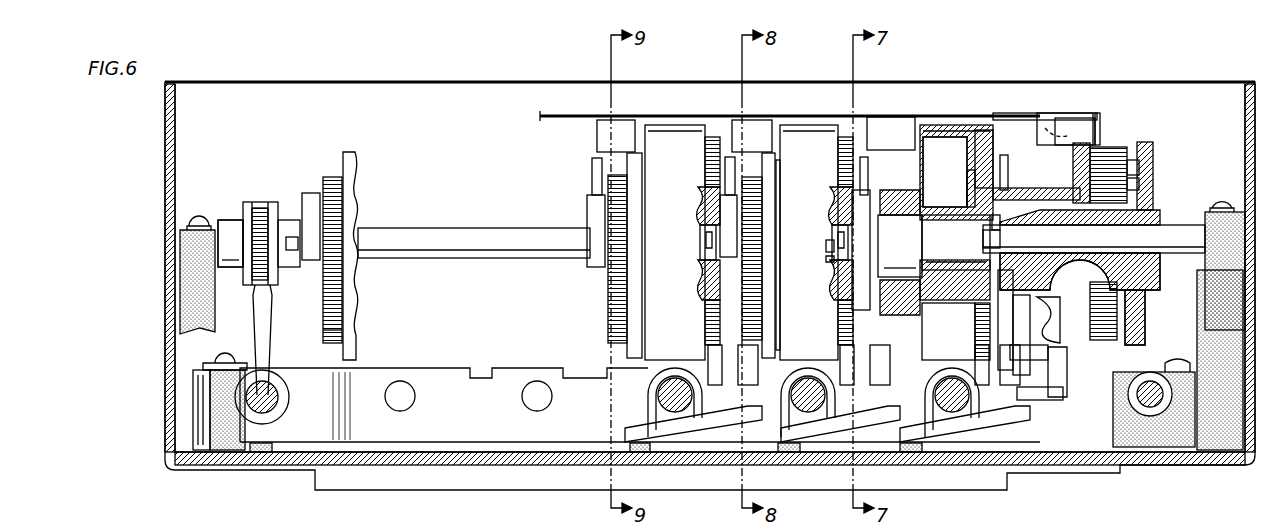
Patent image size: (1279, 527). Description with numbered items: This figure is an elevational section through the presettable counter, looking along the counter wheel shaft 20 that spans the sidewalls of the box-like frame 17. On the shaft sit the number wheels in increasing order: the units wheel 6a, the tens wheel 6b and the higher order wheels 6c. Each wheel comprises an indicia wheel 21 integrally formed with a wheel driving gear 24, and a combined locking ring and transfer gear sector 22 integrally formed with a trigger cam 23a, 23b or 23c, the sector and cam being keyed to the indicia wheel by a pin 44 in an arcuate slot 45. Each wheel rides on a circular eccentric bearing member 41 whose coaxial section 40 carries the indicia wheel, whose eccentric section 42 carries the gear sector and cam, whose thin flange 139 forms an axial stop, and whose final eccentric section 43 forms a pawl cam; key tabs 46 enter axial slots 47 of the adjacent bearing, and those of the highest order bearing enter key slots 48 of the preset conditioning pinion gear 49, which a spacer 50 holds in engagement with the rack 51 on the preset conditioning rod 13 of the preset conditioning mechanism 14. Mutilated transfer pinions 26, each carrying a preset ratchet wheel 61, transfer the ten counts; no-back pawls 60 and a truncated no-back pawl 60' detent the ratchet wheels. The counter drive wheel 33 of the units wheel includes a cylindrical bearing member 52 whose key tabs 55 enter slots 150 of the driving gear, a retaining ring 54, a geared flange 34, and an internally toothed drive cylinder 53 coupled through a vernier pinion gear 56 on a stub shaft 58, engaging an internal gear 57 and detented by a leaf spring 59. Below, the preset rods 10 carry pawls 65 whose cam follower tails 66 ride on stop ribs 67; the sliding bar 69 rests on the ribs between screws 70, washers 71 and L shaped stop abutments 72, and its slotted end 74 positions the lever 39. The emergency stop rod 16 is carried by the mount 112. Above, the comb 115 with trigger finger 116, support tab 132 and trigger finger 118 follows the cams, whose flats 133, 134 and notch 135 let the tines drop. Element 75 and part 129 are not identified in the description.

The lowest order number wheel 6a is at (953, 125).
The next-to-lowest order number wheel 6b is at (815, 124).
The higher order number wheels 6c is at (680, 124).
The preset rods 10 is at (658, 397).
The preset conditioning rod 13 is at (278, 408).
The preset conditioning mechanism 14 is at (230, 208).
The emergency stop rod 16 is at (1148, 412).
The housing or frame 17 is at (1255, 388).
The counter wheel shaft 20 is at (458, 228).
The indicia wheel 21 is at (697, 124).
The combined locking ring and transfer gear sector 22 is at (325, 340).
The trigger cam 23a is at (946, 172).
The trigger cam 23b is at (778, 182).
The trigger cam 23c is at (350, 152).
The wheel driving gear 24 is at (712, 137).
The mutilated transfer pinions 26 is at (840, 360).
The counter drive wheel 33 is at (1098, 136).
The counter drive gear 34 is at (1145, 140).
The lever 39 is at (1066, 382).
The axial section 40 is at (700, 228).
The circular eccentric bearing member 41 is at (1008, 219).
The axial section 42 is at (915, 242).
The axial section 43 is at (309, 193).
The pin 44 is at (940, 316).
The arcuate slot 45 is at (955, 331).
The key tabs 46 is at (292, 275).
The axial slots 47 is at (1010, 241).
The axial key slots 48 is at (289, 236).
The preset conditioning pinion gear 49 is at (258, 204).
The spacer 50 is at (230, 218).
The rack 51 is at (256, 300).
The cylindrical bearing member 52 is at (1210, 212).
The internally toothed drive cylinder 53 is at (1115, 148).
The retaining ring 54 is at (1220, 208).
The key tabs 55 is at (978, 292).
The adjustable vernier pinion gear 56 is at (1140, 166).
The internal gear 57 is at (1095, 335).
The stub shaft 58 is at (1143, 184).
The leaf spring 59 is at (1097, 265).
The no-back pawls 60 is at (716, 144).
The truncated no-back pawl 60' is at (1010, 140).
The preset ratchet wheels 61 is at (702, 290).
The pawls 65 is at (827, 424).
The cam follower tails 66 is at (650, 420).
The flat stop ribs 67 is at (640, 452).
The sliding bar 69 is at (470, 416).
The upright screws 70 is at (230, 358).
The washers 71 is at (208, 370).
The L shaped stop abutments 72 is at (537, 382).
The slotted end 74 is at (1040, 400).
The base 75 is at (257, 457).
The mount 112 is at (1172, 442).
The comb 115 is at (548, 114).
The trigger finger 116 is at (892, 130).
The trigger finger 118 is at (1075, 122).
The bracket 129 is at (1072, 118).
The rigid support tab 132 is at (1020, 113).
The flats 133 is at (640, 150).
The flat 134 is at (778, 150).
The notch 135 is at (826, 246).
The minor axial section 139 is at (342, 215).
The slots 150 is at (980, 187).